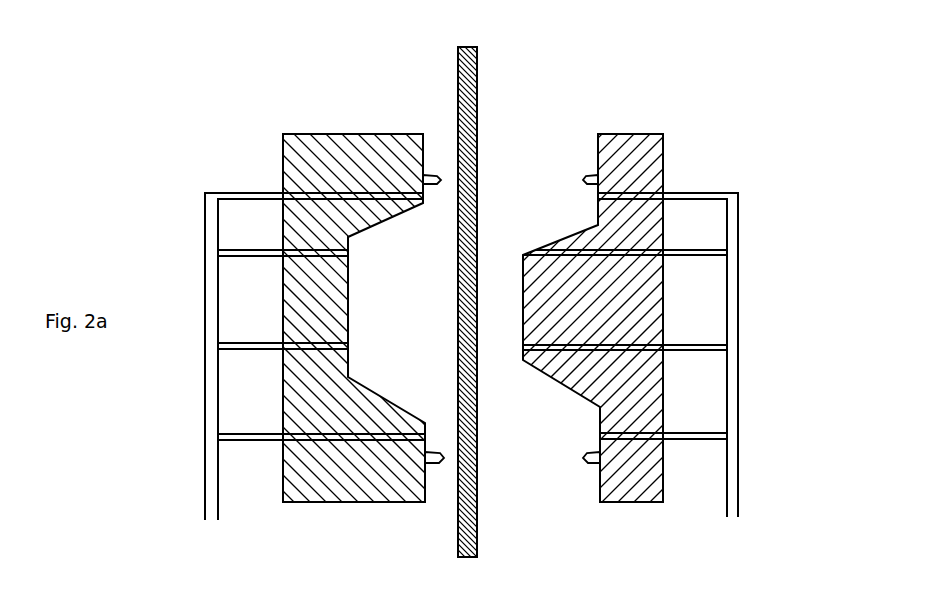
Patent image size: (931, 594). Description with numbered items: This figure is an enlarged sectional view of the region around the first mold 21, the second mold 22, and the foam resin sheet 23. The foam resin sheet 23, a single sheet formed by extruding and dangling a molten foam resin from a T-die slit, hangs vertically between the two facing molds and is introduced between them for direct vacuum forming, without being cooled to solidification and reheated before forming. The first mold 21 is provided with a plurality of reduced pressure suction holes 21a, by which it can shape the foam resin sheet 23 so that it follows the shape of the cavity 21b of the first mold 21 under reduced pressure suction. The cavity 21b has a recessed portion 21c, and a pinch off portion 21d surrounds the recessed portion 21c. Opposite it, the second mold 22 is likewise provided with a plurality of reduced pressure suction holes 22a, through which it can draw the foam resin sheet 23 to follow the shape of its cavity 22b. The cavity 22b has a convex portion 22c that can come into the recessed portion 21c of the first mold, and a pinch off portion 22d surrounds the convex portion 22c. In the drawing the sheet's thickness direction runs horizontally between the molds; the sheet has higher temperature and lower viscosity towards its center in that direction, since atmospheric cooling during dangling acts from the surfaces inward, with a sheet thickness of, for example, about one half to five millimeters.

The first mold 21 is at (353, 502).
The reduced pressure suction holes 21a is at (258, 193).
The cavity 21b is at (374, 291).
The recessed portion 21c is at (348, 320).
The pinch off portion 21d is at (428, 177).
The second mold 22 is at (630, 502).
The reduced pressure suction holes 22a is at (703, 193).
The cavity 22b is at (550, 218).
The convex portion 22c is at (530, 297).
The pinch off portion 22d is at (586, 178).
The foam resin sheet 23 is at (473, 77).